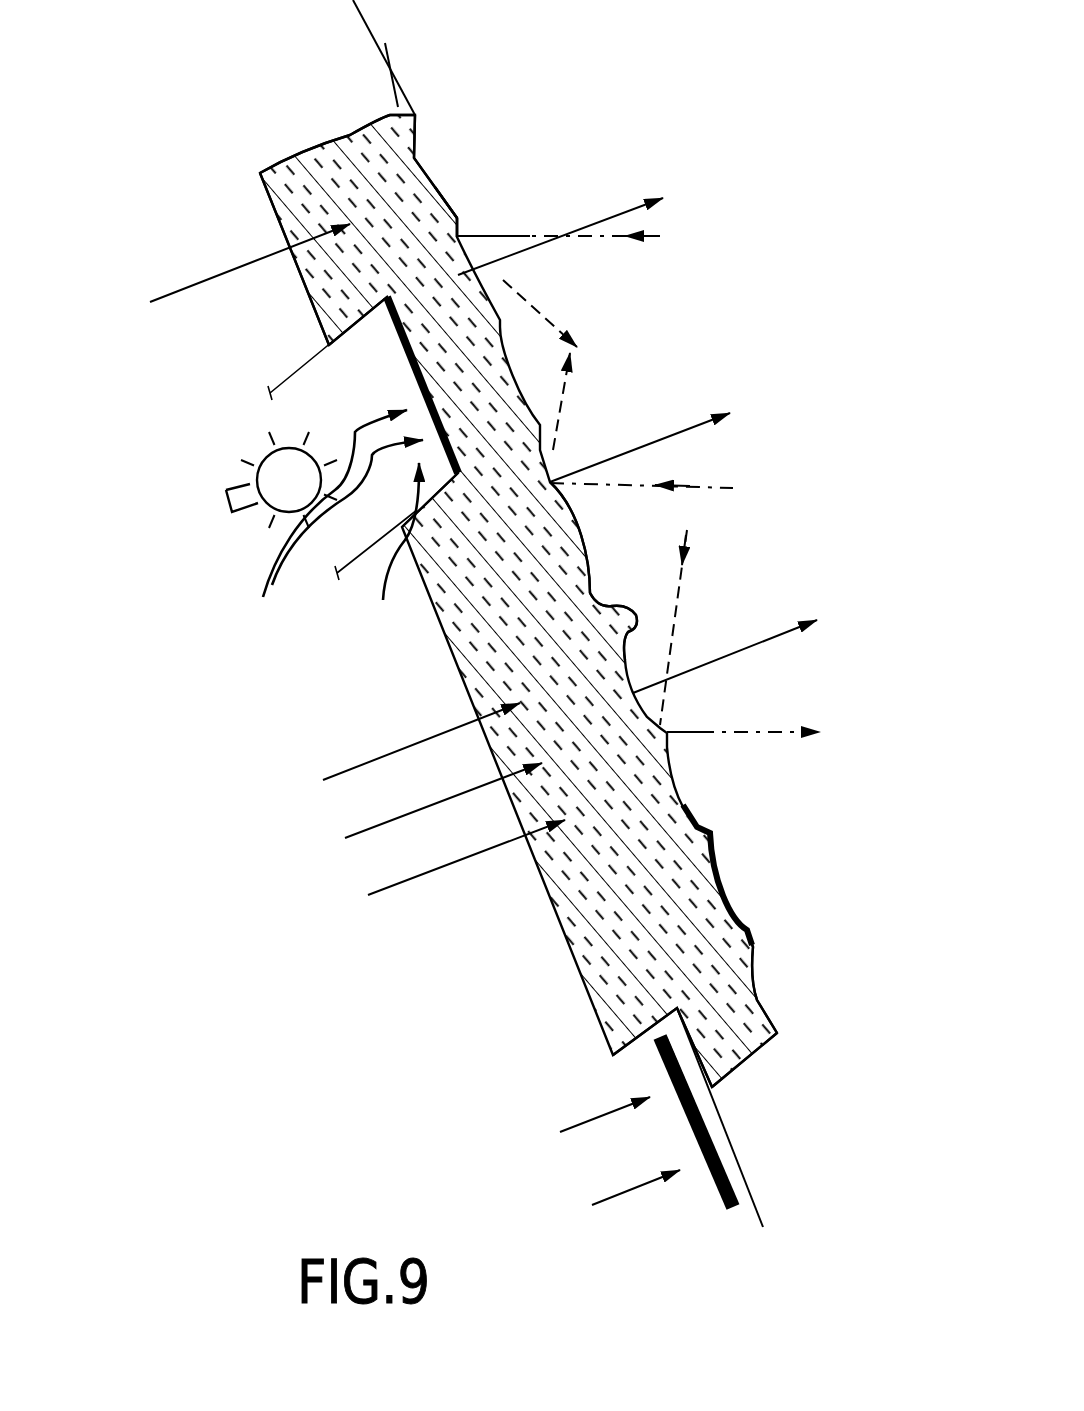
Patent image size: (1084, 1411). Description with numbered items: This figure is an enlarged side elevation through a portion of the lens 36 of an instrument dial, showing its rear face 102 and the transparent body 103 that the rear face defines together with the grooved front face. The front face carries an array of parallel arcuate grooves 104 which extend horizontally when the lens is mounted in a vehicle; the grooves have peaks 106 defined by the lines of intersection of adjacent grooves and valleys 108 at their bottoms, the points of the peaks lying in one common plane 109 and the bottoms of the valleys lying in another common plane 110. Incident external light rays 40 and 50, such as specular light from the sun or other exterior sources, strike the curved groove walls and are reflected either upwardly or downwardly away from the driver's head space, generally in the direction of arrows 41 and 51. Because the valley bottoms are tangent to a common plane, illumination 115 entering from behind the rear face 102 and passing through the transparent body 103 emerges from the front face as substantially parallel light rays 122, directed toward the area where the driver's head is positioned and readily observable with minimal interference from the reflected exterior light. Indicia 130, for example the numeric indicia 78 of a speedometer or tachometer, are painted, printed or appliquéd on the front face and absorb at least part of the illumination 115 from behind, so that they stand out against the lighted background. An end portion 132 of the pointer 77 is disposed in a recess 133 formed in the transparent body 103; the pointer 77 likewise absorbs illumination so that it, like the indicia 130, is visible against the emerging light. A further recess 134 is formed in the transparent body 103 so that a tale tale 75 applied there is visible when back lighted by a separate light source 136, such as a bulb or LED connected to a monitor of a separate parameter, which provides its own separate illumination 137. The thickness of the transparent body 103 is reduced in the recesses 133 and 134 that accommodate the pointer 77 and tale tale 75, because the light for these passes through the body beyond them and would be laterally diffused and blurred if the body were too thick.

The lens 36 is at (323, 150).
The incident external light ray 40 is at (720, 487).
The reflected light direction arrow 41 is at (560, 407).
The incident external light ray 50 is at (650, 237).
The reflected light direction arrow 51 is at (523, 293).
The tale tale 75 is at (397, 340).
The pointer 77 is at (717, 1200).
The numeric indicia 78 is at (693, 823).
The rear face 102 is at (303, 295).
The transparent body 103 is at (410, 259).
The arcuate grooves 104 is at (452, 153).
The peaks 106 is at (458, 218).
The valleys 108 is at (423, 163).
The common plane 109 is at (397, 63).
The common plane 110 is at (357, 8).
The illumination 115 is at (203, 277).
The parallel light rays 122 is at (616, 210).
The indicia 130 is at (750, 930).
The end portion of the pointer 132 is at (707, 1120).
The recess 133 is at (640, 1047).
The recess 134 is at (388, 556).
The separate light source 136 is at (230, 492).
The separate illumination 137 is at (325, 525).